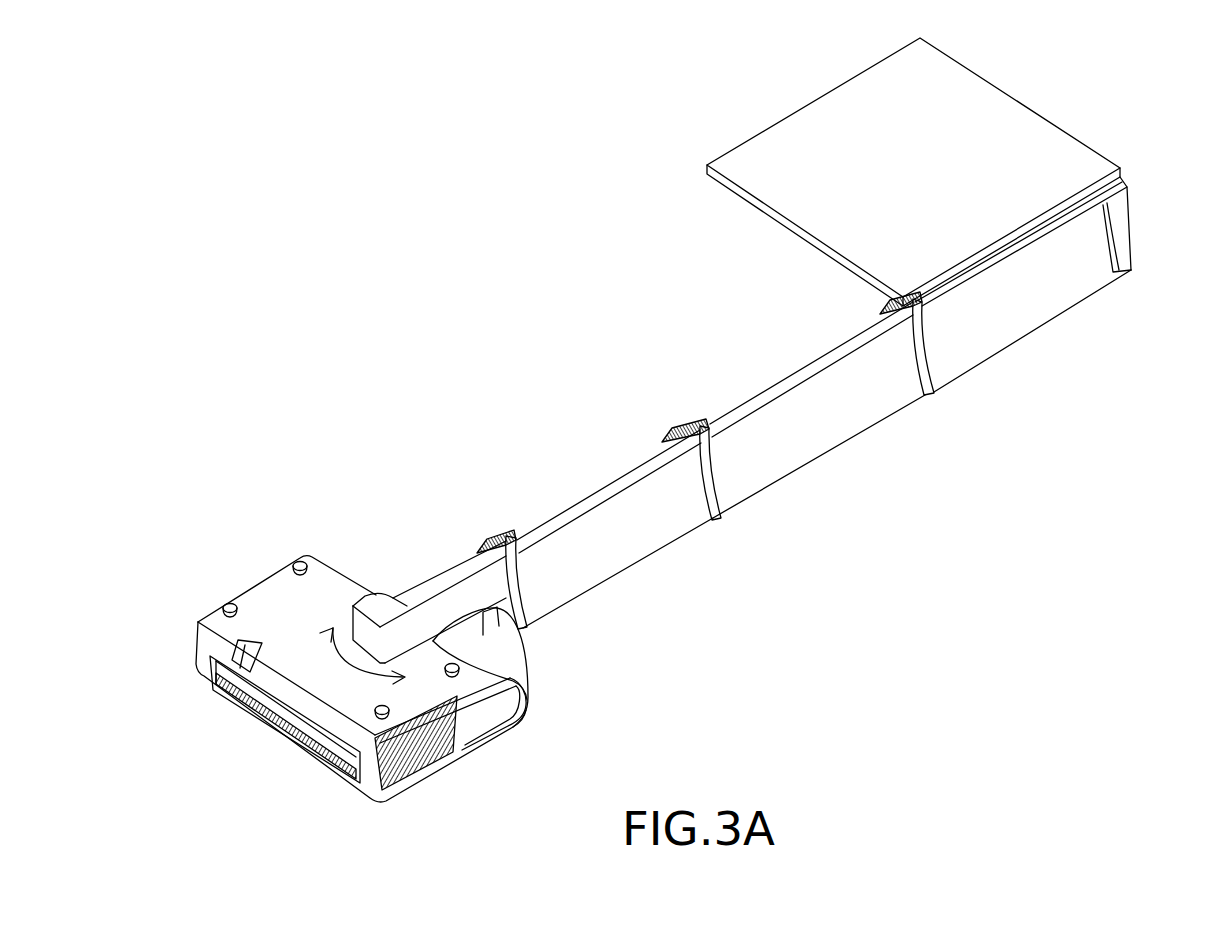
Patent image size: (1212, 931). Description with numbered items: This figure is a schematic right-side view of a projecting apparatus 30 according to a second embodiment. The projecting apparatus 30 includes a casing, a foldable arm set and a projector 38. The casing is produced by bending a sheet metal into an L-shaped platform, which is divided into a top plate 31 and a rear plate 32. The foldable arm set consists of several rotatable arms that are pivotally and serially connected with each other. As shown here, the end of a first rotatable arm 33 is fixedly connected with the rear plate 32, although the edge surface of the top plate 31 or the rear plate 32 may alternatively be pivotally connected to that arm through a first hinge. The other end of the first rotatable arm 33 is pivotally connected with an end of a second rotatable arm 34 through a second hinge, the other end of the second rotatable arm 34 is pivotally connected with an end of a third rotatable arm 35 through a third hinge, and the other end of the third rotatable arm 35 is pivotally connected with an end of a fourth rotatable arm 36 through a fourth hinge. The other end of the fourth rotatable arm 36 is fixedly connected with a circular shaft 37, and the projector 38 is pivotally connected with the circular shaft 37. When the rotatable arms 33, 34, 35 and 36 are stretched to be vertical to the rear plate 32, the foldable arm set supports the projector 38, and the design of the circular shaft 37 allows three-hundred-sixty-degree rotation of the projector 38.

The projecting apparatus 30 is at (634, 92).
The top plate 31 is at (997, 118).
The rear plate 32 is at (1126, 222).
The first rotatable arm 33 is at (1033, 302).
The second rotatable arm 34 is at (822, 425).
The third rotatable arm 35 is at (620, 545).
The fourth rotatable arm 36 is at (478, 590).
The circular shaft 37 is at (377, 603).
The projector 38 is at (268, 598).